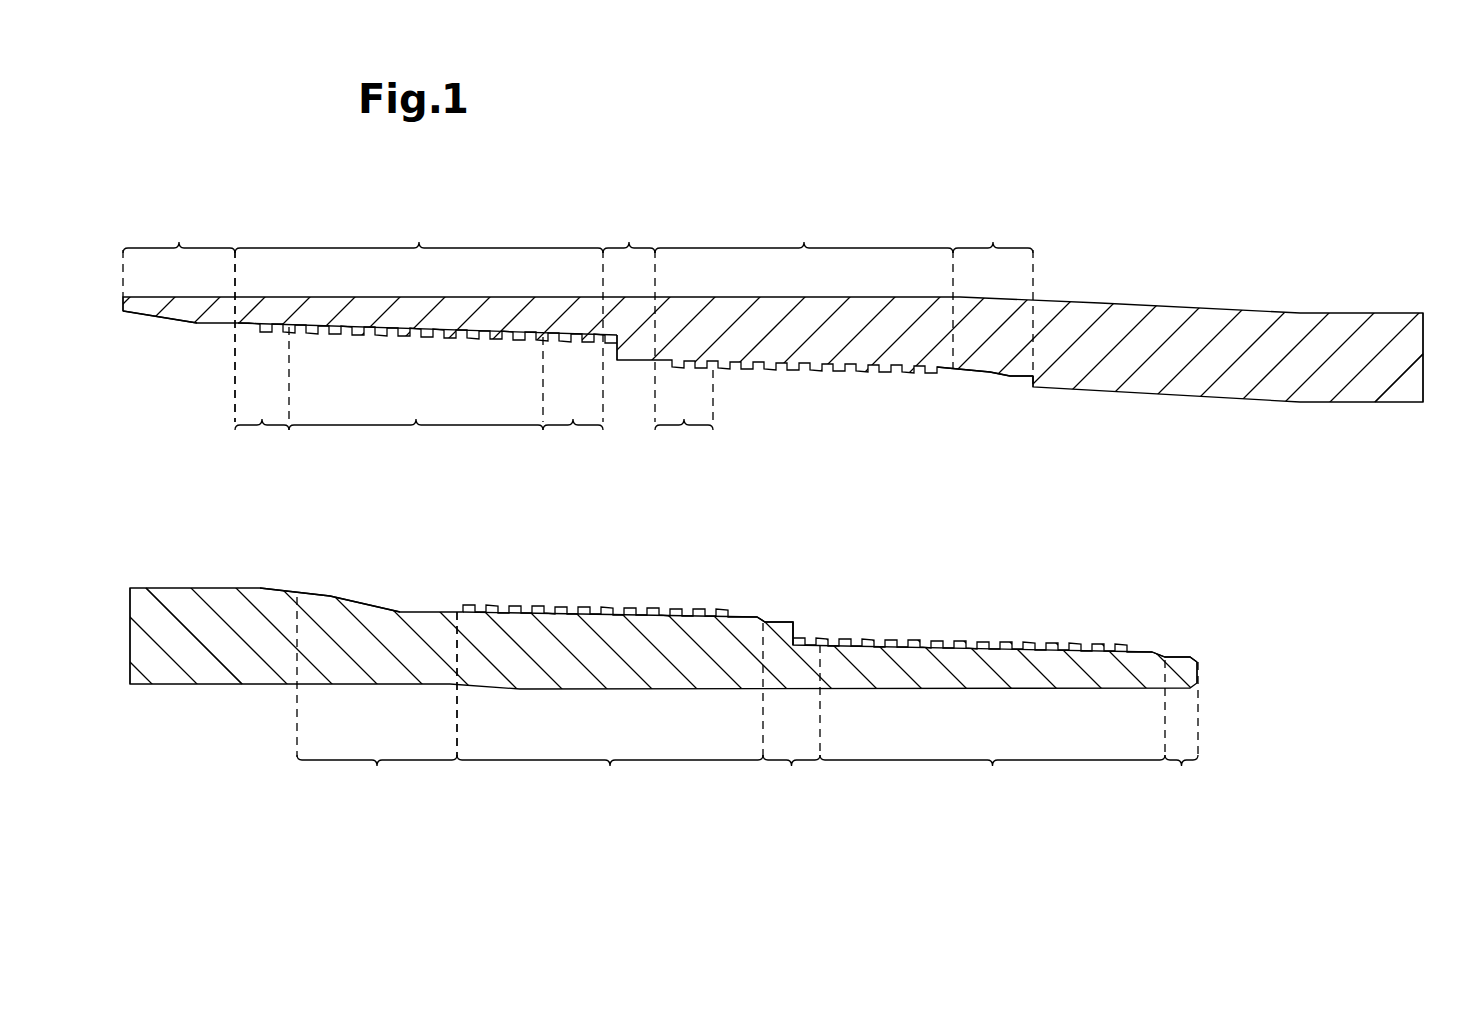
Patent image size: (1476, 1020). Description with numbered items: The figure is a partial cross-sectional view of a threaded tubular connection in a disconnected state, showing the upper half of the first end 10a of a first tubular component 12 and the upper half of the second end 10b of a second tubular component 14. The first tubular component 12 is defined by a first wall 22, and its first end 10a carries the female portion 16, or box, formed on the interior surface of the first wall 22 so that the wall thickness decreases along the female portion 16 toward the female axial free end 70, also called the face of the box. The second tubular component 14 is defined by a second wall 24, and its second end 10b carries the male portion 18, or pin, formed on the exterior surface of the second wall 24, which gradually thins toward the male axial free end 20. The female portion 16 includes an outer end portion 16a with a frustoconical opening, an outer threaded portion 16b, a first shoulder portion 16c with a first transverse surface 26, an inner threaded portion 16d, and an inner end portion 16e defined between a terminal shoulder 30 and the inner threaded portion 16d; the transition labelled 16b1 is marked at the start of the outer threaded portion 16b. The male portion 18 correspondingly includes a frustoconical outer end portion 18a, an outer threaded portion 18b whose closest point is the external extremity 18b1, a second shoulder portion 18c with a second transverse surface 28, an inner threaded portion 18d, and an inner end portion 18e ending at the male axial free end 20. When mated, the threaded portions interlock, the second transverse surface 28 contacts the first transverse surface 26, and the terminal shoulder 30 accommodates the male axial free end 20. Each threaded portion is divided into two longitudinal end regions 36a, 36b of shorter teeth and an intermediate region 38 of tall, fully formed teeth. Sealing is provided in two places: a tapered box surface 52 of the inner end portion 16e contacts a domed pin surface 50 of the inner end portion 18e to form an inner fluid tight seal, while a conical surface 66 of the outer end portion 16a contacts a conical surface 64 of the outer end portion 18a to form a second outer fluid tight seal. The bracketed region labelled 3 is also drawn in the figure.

The first end 10a is at (760, 326).
The second end 10b is at (705, 665).
The first tubular component 12 is at (1425, 318).
The second tubular component 14 is at (127, 650).
The female portion 16 is at (513, 457).
The outer end portion 16a is at (179, 318).
The outer threaded portion 16b is at (419, 318).
The transition point 16b1 is at (235, 248).
The first shoulder portion 16c is at (629, 318).
The inner threaded portion 16d is at (804, 291).
The inner end portion 16e is at (993, 299).
The male portion 18 is at (727, 595).
The outer end portion 18a is at (377, 697).
The outer threaded portion 18b is at (610, 710).
The external extremity 18b1 is at (457, 760).
The second shoulder portion 18c is at (791, 721).
The inner threaded portion 18d is at (992, 729).
The inner end portion 18e is at (1182, 730).
The male axial free end 20 is at (1198, 670).
The first wall 22 is at (1393, 365).
The second wall 24 is at (230, 652).
The first transverse surface 26 is at (617, 340).
The second transverse surface 28 is at (793, 635).
The terminal shoulder 30 is at (1033, 385).
The longitudinal end region 36a is at (262, 394).
The longitudinal end region 36b is at (573, 399).
The intermediate region 38 is at (416, 440).
The section 3 is at (684, 416).
The pin surface 50 is at (1180, 657).
The box surface 52 is at (1000, 375).
The surface 64 is at (355, 600).
The surface 66 is at (197, 323).
The female axial free end 70 is at (123, 300).